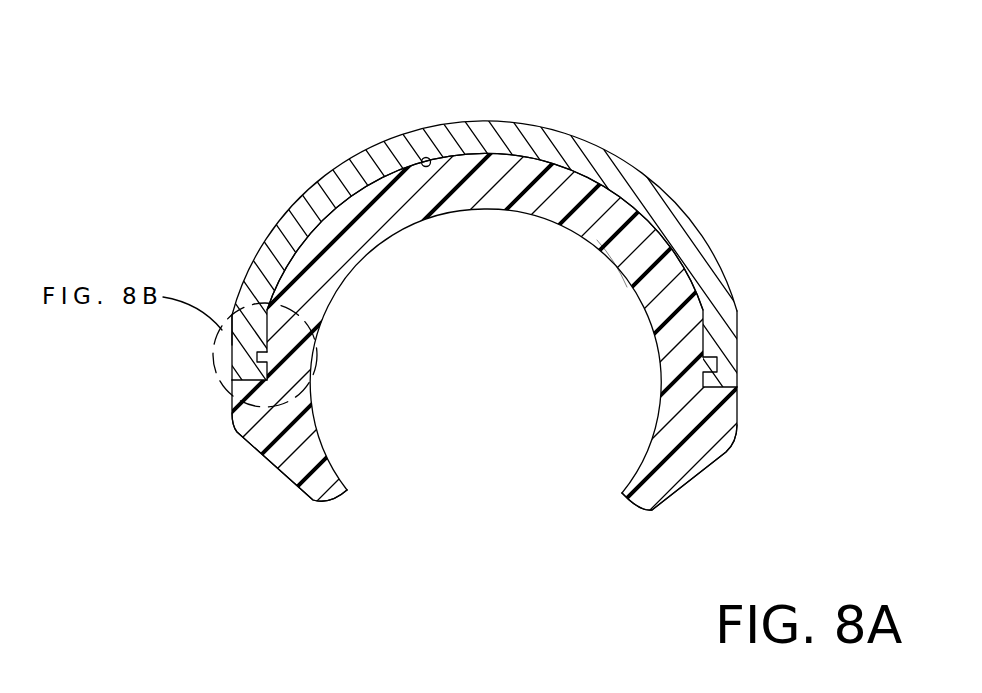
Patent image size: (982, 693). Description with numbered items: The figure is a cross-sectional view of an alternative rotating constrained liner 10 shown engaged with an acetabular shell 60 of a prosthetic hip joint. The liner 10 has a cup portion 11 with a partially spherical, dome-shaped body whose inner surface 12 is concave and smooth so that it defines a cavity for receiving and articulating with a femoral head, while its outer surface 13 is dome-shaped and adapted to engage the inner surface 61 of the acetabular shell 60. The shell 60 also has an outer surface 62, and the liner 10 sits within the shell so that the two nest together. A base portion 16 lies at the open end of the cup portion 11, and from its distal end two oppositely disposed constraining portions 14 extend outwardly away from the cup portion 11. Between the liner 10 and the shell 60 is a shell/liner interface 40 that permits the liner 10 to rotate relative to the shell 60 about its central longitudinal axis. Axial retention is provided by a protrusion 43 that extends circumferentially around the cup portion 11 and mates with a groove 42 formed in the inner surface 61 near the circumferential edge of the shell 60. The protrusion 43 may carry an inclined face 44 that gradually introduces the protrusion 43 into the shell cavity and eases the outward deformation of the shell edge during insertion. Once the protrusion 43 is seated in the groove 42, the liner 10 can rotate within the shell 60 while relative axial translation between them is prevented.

The rotating constrained liner 10 is at (712, 480).
The cup portion 11 is at (597, 240).
The inner surface 12 is at (495, 214).
The outer surface 13 is at (600, 196).
The constraining portions 14 is at (318, 444).
The base portion 16 is at (622, 292).
The shell/liner interface 40 is at (215, 344).
The groove 42 is at (253, 357).
The protrusion 43 is at (250, 385).
The inclined face 44 is at (238, 318).
The acetabular shell 60 is at (549, 126).
The inner surface 61 is at (430, 157).
The outer surface 62 is at (618, 158).